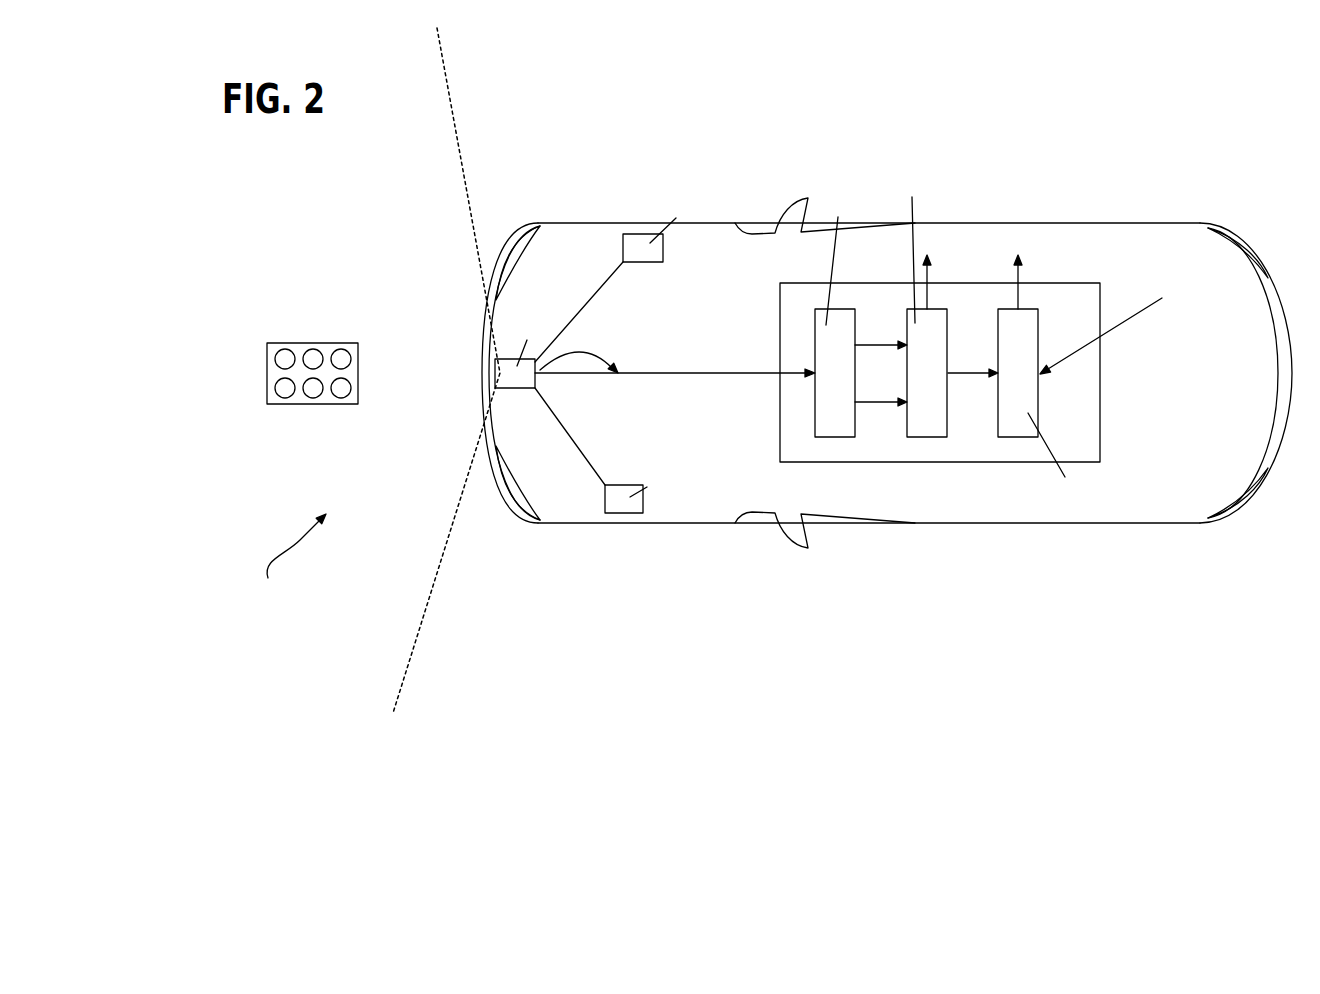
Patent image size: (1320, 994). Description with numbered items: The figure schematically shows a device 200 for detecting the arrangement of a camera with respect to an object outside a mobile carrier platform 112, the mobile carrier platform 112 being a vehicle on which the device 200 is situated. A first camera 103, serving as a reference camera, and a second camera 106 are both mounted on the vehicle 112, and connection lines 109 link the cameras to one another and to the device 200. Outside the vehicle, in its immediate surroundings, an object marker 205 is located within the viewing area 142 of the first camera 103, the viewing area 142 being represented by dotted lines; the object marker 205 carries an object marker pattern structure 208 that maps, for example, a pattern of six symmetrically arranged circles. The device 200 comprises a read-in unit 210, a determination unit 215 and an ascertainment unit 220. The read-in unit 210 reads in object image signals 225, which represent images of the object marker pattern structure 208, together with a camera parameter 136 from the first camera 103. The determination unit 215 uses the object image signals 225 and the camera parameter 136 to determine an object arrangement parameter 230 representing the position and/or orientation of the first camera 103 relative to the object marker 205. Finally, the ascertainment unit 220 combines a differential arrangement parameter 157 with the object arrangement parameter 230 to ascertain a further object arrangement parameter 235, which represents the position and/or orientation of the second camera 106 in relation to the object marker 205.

The first camera 103 is at (500, 375).
The second camera 106 is at (637, 240).
The connection line 109 is at (616, 270).
The mobile carrier platform 112 is at (1253, 332).
The camera parameter 136 is at (584, 383).
The viewing area 142 is at (284, 563).
The differential arrangement parameter 157 is at (1097, 346).
The device 200 is at (1087, 447).
The object marker 205 is at (267, 363).
The object marker pattern structure 208 is at (285, 404).
The read-in unit 210 is at (825, 430).
The determination unit 215 is at (920, 430).
The ascertainment unit 220 is at (1028, 422).
The object image signals 225 is at (700, 372).
The object arrangement parameter 230 is at (928, 296).
The further object arrangement parameter 235 is at (1020, 296).